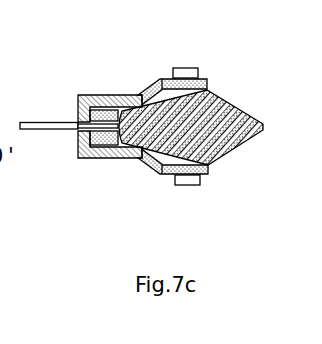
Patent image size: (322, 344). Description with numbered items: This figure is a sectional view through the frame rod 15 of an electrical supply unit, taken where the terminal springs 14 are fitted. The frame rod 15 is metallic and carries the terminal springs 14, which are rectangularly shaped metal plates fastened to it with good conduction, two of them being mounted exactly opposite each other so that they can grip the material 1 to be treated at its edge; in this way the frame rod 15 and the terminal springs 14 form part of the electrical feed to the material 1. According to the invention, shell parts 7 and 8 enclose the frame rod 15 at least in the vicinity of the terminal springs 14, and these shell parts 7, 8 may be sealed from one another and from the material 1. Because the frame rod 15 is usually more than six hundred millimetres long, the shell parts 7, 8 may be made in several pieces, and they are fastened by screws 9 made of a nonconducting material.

The material to be treated 1 is at (72, 131).
The shell part 7 is at (124, 96).
The shell part 8 is at (147, 160).
The screws 9 is at (185, 86).
The terminal spring 14 is at (109, 112).
The frame rod 15 is at (240, 93).